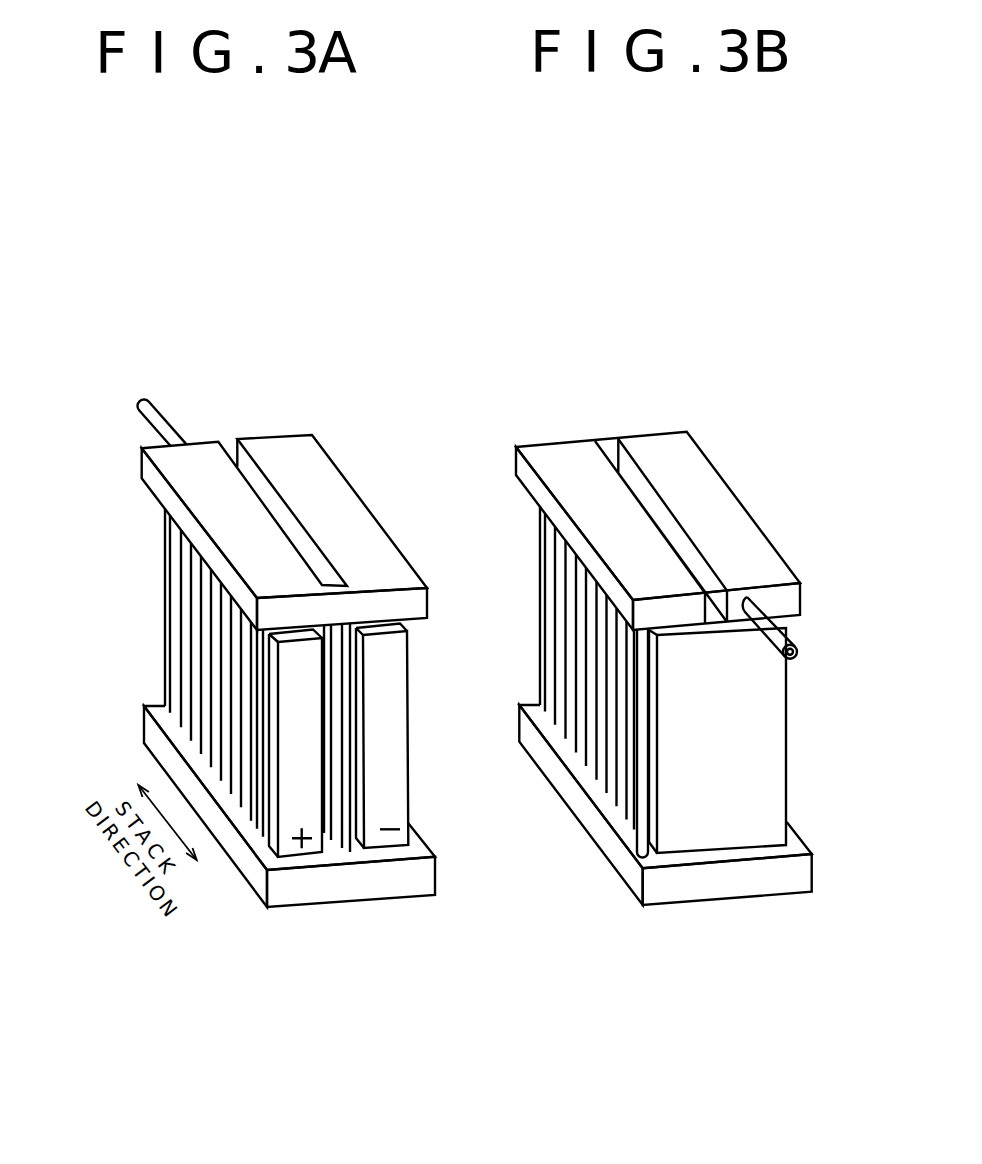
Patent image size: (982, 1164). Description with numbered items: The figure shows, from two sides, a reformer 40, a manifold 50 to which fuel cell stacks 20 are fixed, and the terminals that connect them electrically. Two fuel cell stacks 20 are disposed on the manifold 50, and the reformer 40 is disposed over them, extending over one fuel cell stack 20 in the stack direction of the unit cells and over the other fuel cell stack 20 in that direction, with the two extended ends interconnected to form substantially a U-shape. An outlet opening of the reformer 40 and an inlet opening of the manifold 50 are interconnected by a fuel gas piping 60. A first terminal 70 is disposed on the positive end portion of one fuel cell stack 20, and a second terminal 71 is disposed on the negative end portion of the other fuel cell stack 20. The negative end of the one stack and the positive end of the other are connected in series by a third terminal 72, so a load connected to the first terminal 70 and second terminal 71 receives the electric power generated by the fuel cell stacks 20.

In FIG. 3A, the fuel cell stack 20 is at (152, 588).
In FIG. 3B, the fuel cell stack 20 is at (530, 552).
In FIG. 3A, the reformer 40 is at (300, 448).
In FIG. 3B, the reformer 40 is at (675, 447).
In FIG. 3A, the manifold 50 is at (389, 900).
In FIG. 3B, the manifold 50 is at (762, 897).
In FIG. 3B, the fuel gas piping 60 is at (637, 840).
In FIG. 3A, the first terminal 70 is at (313, 808).
In FIG. 3A, the second terminal 71 is at (393, 775).
In FIG. 3B, the third terminal 72 is at (767, 773).